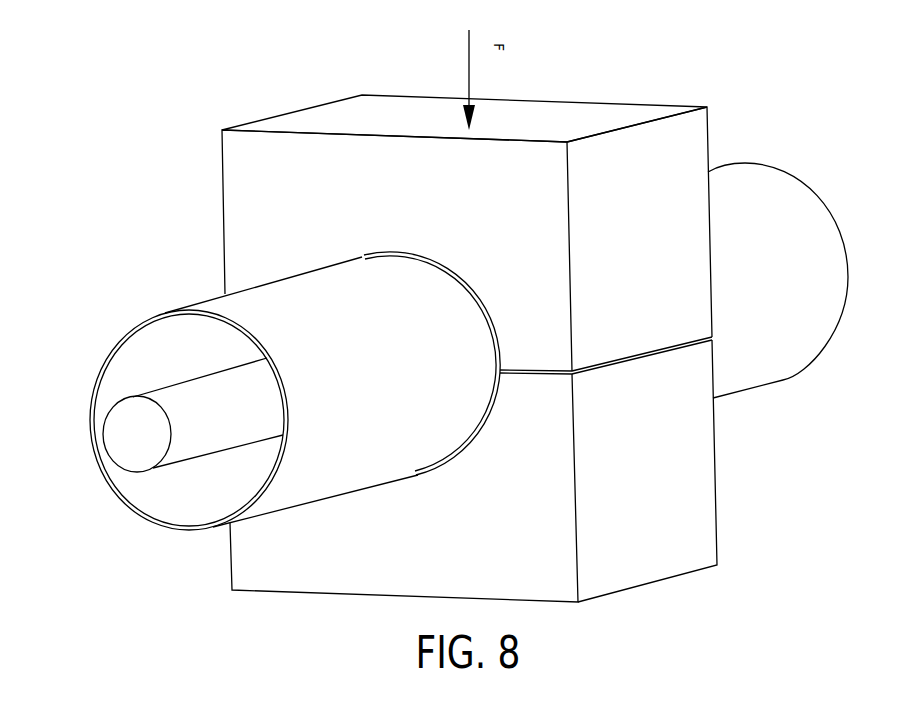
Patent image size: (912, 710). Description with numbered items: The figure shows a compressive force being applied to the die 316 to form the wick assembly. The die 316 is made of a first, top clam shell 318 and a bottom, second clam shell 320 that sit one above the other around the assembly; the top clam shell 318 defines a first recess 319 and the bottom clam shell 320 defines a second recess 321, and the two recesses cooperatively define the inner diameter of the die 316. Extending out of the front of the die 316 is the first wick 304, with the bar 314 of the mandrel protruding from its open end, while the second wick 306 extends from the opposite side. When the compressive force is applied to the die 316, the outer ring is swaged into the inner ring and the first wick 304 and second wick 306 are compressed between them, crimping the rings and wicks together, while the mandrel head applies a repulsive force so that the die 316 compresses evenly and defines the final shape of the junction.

The first wick 304 is at (148, 492).
The second wick 306 is at (777, 360).
The bar 314 is at (120, 437).
The die 316 is at (508, 304).
The first, top clam shell 318 is at (688, 147).
The first recess 319 is at (403, 253).
The bottom, second clam shell 320 is at (692, 505).
The second recess 321 is at (428, 478).